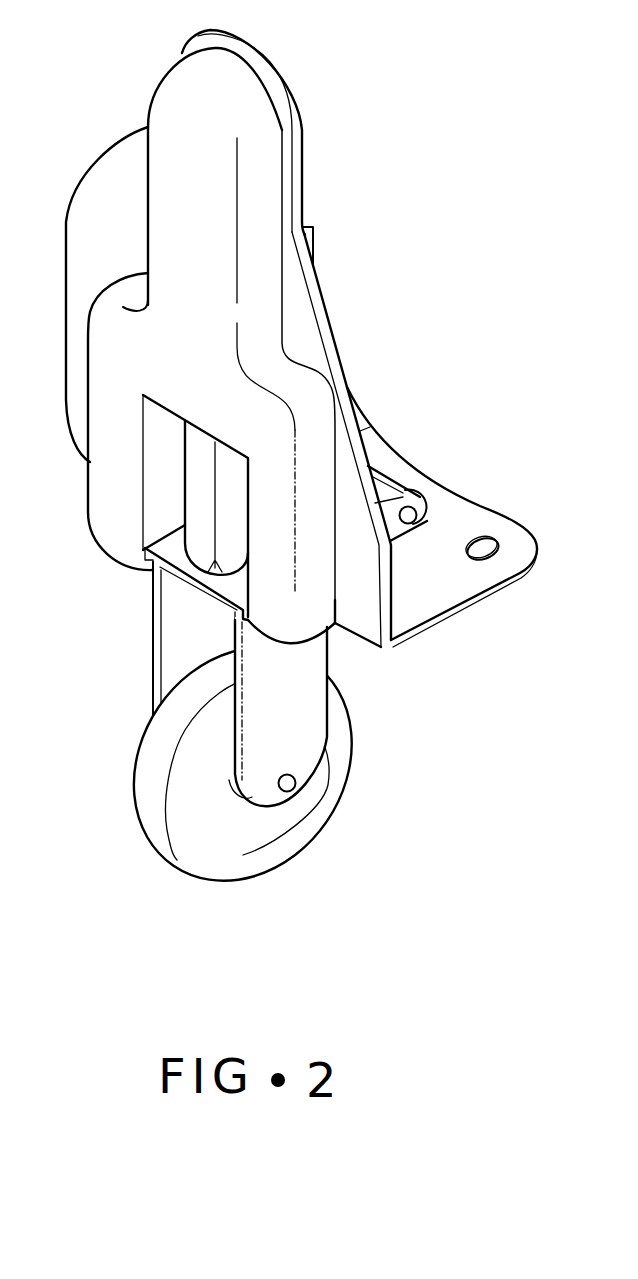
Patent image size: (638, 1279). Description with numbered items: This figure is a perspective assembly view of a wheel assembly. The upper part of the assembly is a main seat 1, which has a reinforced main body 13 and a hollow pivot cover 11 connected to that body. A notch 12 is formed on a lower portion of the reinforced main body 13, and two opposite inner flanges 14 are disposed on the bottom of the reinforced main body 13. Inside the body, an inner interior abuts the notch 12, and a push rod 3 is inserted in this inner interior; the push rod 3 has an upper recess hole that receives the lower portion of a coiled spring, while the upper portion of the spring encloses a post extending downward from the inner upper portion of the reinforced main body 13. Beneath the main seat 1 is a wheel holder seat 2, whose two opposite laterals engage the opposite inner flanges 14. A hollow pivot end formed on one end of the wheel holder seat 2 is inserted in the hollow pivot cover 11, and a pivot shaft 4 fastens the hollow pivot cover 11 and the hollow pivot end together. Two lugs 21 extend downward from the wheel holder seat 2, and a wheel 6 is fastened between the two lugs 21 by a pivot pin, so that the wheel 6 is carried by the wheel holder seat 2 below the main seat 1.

The main seat 1 is at (373, 385).
The hollow pivot cover 11 is at (405, 497).
The pivot shaft 4 is at (412, 516).
The reinforced main body 13 is at (107, 480).
The push rod 3 is at (197, 462).
The notch 12 is at (160, 517).
The inner flanges 14 is at (152, 563).
The wheel holder seat 2 is at (205, 580).
The lugs 21 is at (328, 677).
The wheel 6 is at (337, 763).